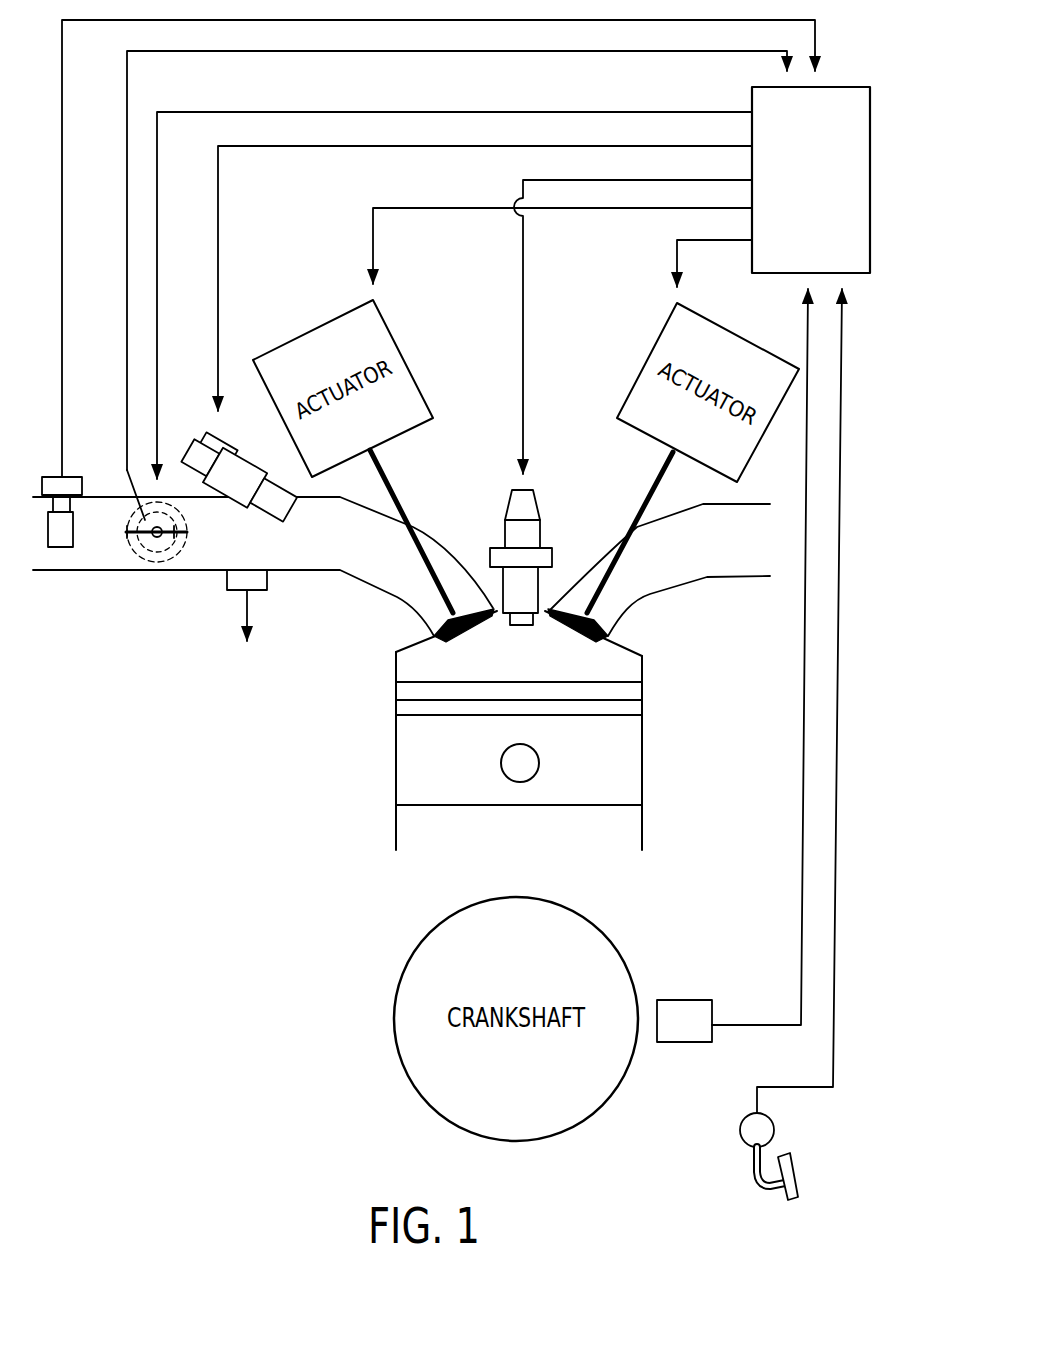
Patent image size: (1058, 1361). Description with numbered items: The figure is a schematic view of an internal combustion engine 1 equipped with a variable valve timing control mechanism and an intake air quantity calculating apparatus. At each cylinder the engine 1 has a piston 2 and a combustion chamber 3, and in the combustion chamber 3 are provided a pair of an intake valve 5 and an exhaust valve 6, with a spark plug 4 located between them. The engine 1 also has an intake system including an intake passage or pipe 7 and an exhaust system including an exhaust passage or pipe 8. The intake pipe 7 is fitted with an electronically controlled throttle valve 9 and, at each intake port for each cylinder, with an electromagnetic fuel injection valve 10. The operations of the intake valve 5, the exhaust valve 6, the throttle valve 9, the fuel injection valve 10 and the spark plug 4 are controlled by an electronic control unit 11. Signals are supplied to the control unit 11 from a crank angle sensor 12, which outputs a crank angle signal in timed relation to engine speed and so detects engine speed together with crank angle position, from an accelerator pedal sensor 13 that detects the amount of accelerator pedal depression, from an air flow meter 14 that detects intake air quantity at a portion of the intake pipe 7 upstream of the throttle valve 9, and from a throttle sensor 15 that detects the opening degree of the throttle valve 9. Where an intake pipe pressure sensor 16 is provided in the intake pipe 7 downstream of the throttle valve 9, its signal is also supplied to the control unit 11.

The internal combustion engine 1 is at (355, 742).
The piston 2 is at (627, 767).
The combustion chamber 3 is at (622, 663).
The spark plug 4 is at (540, 528).
The intake valve 5 is at (400, 495).
The exhaust valve 6 is at (643, 498).
The intake passage or pipe 7 is at (293, 562).
The exhaust passage or pipe 8 is at (732, 566).
The electronically controlled throttle valve 9 is at (130, 547).
The electromagnetic fuel injection valve 10 is at (195, 440).
The electronic control unit 11 is at (855, 96).
The crank angle sensor 12 is at (713, 1008).
The accelerator pedal sensor 13 is at (748, 1128).
The air flow meter 14 is at (78, 473).
The throttle sensor 15 is at (155, 550).
The intake pipe pressure sensor 16 is at (238, 593).